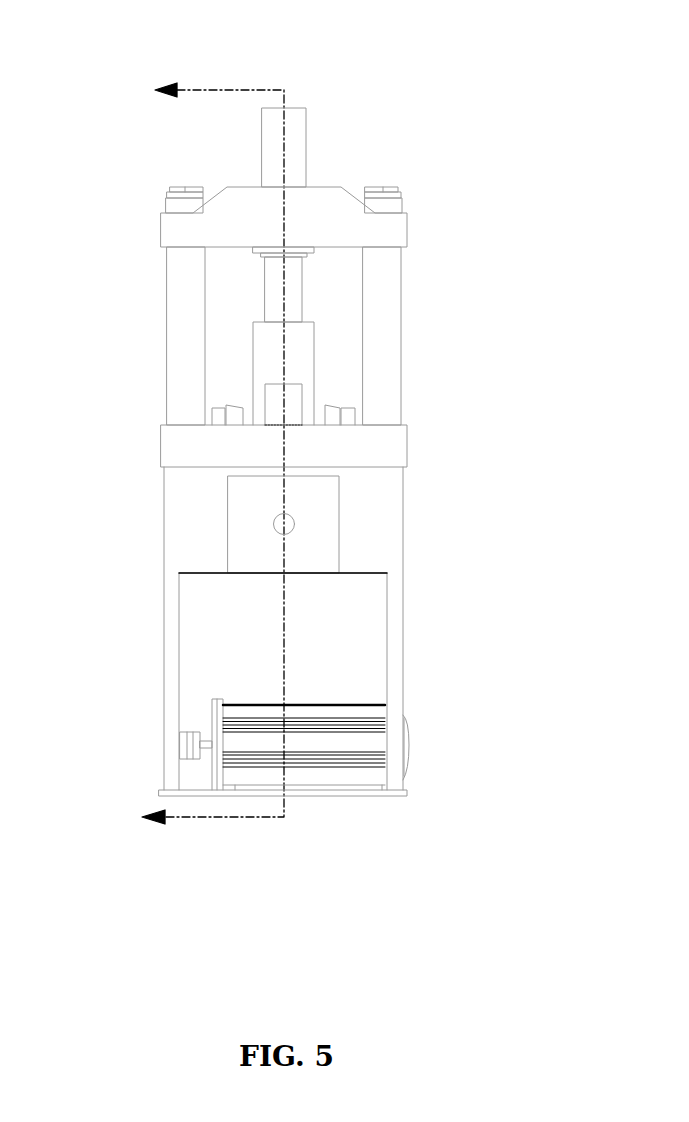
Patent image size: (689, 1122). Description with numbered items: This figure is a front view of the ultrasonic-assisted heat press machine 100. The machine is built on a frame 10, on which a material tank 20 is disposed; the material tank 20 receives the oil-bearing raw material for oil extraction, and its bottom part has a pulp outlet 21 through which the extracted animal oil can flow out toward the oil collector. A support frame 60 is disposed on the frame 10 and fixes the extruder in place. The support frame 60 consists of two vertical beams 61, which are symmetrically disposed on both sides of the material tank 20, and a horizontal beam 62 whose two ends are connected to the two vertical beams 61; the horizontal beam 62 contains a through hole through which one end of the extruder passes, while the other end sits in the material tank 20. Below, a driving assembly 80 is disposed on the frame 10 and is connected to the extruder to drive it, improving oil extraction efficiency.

The ultrasonic-assisted heat press machine 100 is at (273, 75).
The frame 10 is at (393, 612).
The material tank 20 is at (292, 361).
The pulp outlet 21 is at (275, 395).
The support frame 60 is at (508, 197).
The vertical beam 61 is at (178, 283).
The horizontal beam 62 is at (312, 222).
The driving assembly 80 is at (353, 740).